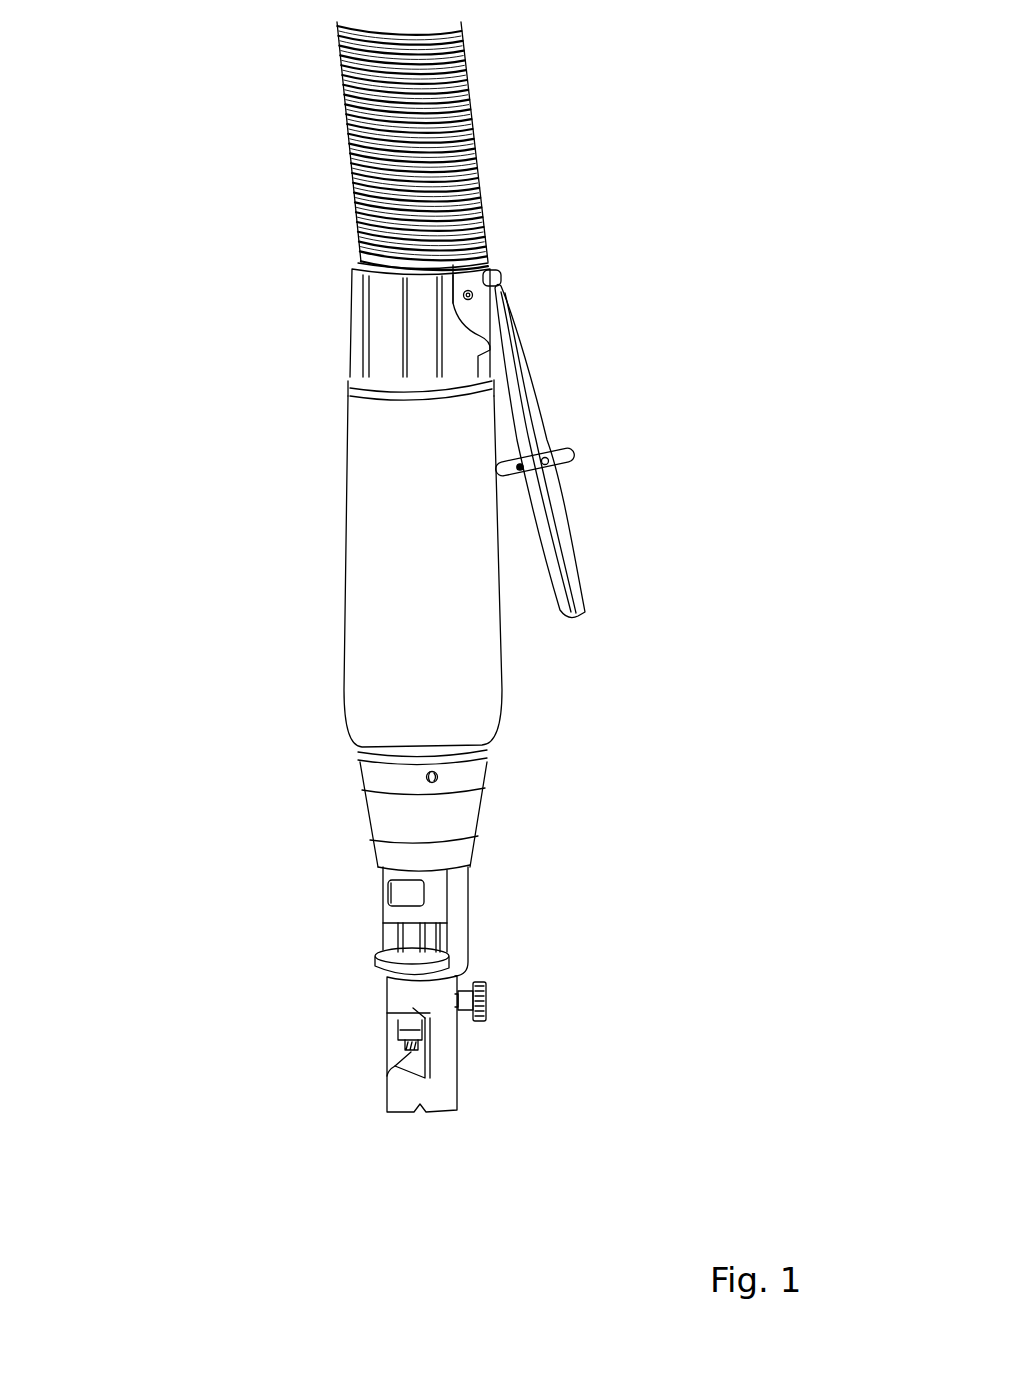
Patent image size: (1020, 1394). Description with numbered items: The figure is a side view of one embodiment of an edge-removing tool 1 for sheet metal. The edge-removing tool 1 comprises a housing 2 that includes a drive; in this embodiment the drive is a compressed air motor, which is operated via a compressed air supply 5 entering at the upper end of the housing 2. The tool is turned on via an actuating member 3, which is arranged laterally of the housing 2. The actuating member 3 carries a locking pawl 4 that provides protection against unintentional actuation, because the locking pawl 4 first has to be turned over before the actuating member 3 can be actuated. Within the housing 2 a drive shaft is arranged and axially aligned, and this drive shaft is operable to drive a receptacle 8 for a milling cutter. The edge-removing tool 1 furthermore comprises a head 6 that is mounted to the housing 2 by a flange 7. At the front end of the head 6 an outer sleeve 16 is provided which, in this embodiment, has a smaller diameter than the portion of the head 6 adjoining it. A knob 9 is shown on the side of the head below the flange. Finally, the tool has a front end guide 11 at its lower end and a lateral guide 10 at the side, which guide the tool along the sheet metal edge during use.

The edge-removing tool 1 is at (208, 875).
The housing 2 is at (360, 608).
The actuating member 3 is at (562, 520).
The locking pawl 4 is at (567, 453).
The compressed air supply 5 is at (465, 200).
The head 6 is at (463, 925).
The flange 7 is at (473, 853).
The receptacle 8 is at (407, 914).
The adjusting knob 9 is at (485, 1016).
The lateral guide 10 is at (385, 1048).
The front end guide 11 is at (419, 1134).
The outer sleeve 16 is at (455, 1087).